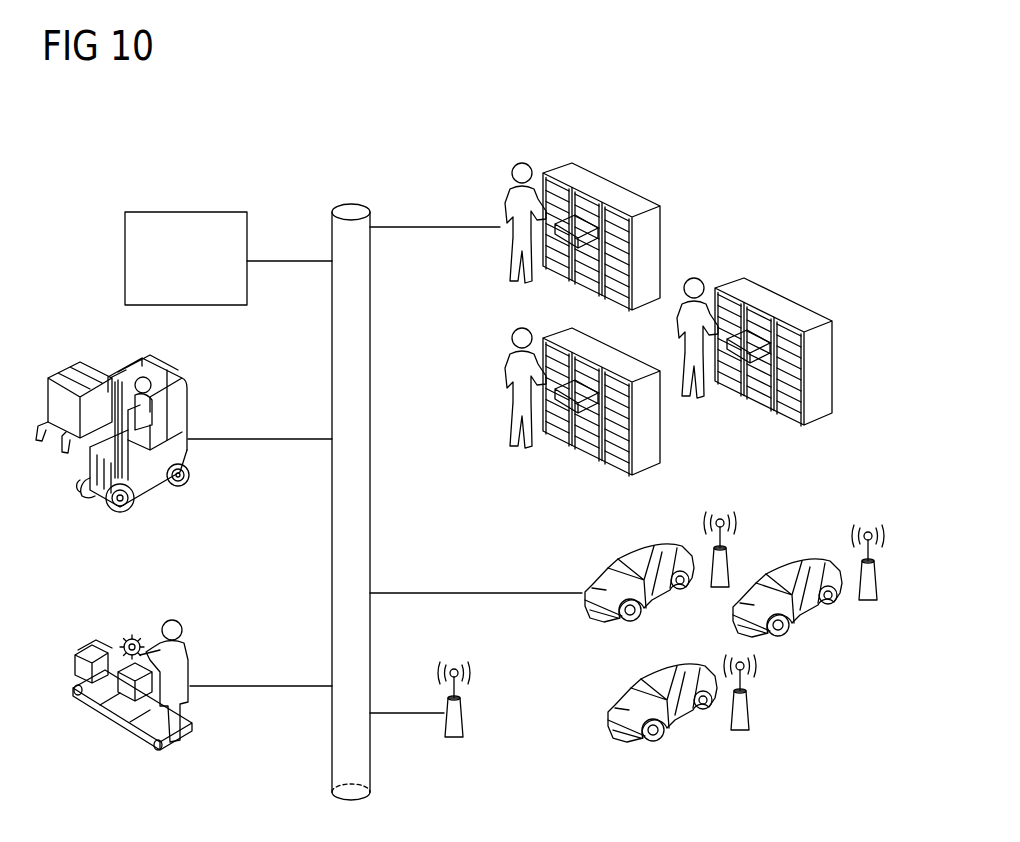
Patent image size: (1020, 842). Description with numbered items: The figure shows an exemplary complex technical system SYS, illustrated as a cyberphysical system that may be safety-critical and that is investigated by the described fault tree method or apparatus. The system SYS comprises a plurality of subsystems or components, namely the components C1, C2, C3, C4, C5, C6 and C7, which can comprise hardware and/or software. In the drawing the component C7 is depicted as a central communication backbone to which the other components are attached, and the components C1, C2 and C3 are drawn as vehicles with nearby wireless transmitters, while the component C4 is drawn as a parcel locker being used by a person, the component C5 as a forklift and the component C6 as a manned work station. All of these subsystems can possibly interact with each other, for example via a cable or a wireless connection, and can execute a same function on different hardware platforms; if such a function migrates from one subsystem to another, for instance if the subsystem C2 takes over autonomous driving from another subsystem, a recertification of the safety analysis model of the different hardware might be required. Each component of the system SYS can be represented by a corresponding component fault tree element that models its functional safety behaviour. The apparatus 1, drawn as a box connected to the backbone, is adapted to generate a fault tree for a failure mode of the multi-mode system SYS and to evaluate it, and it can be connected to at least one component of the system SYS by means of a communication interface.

The complex technical system SYS is at (672, 128).
The apparatus 1 is at (186, 212).
The component C7 is at (348, 206).
The component C5 is at (122, 363).
The component C6 is at (100, 715).
The component C4 is at (775, 303).
The component C1 is at (641, 548).
The component C2 is at (790, 563).
The component C3 is at (622, 692).